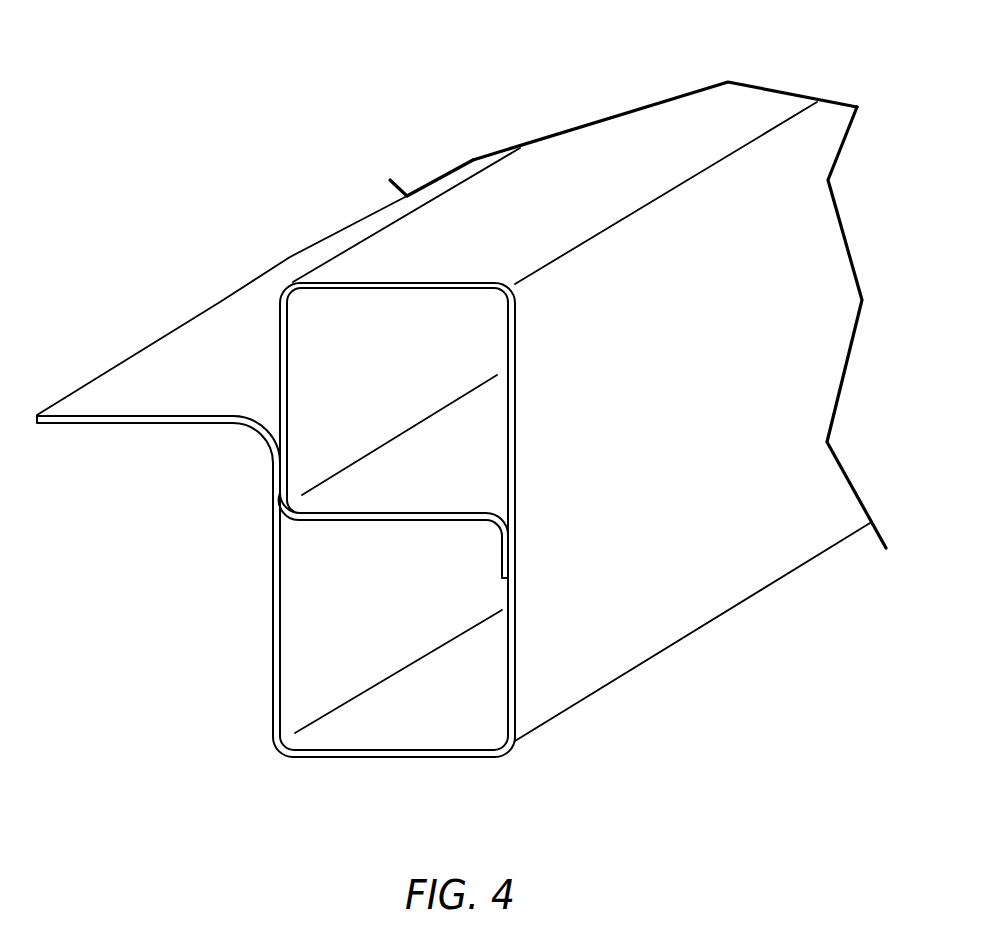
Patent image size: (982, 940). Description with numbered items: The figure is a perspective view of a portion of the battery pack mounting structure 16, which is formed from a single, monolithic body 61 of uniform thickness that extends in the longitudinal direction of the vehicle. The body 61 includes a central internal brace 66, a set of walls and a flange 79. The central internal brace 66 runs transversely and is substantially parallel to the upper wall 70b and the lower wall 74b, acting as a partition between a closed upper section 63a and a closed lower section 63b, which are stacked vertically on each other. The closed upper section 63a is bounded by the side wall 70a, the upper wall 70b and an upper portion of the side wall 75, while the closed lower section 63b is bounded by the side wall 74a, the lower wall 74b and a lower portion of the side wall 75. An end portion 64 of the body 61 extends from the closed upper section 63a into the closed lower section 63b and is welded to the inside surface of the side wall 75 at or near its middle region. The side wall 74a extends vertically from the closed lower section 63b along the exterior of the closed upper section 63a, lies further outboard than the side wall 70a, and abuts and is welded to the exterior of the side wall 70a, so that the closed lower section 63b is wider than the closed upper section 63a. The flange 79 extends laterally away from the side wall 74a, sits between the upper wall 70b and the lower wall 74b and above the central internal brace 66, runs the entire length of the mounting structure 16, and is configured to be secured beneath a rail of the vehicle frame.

The mounting structure 16 is at (173, 228).
The flange 79 is at (175, 375).
The side wall 70a is at (280, 327).
The upper wall 70b is at (597, 180).
The closed upper section 63a is at (468, 427).
The closed lower section 63b is at (337, 642).
The central internal brace 66 is at (380, 520).
The side wall 74a is at (275, 525).
The lower wall 74b is at (383, 758).
The end portion 64 is at (503, 568).
The side wall 75 is at (612, 568).
The body 61 is at (695, 578).